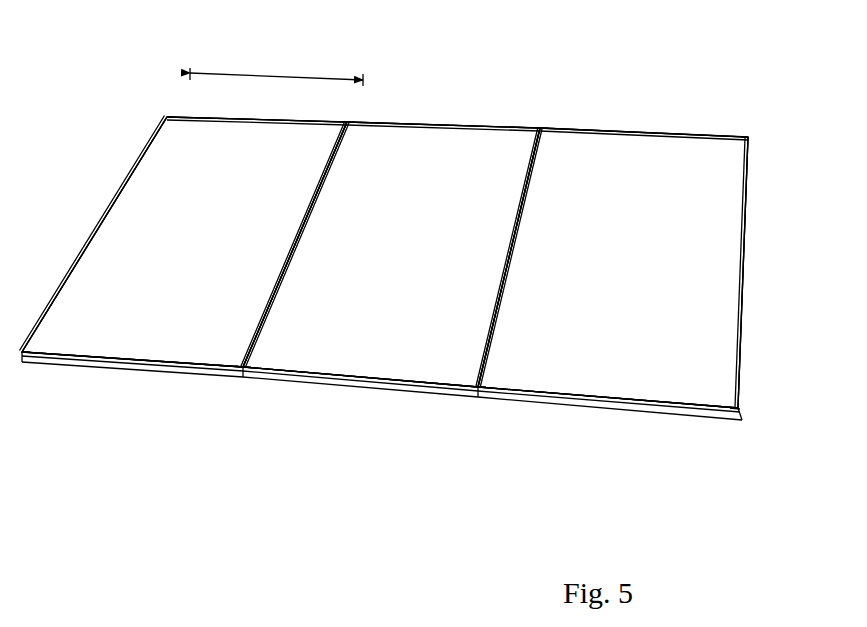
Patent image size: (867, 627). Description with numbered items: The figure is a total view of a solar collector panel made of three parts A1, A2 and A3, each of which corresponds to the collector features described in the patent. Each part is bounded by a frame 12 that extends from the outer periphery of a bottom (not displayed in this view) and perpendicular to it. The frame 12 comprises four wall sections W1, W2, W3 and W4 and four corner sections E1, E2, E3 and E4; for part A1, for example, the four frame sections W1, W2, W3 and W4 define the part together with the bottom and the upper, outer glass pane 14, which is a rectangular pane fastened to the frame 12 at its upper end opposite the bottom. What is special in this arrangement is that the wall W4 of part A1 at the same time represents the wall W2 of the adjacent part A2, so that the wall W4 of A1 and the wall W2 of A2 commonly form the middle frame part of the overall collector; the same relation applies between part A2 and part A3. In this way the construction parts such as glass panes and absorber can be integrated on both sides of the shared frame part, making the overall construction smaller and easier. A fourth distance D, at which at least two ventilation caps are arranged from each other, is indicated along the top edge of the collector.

The frame 12 is at (577, 404).
The outer glass pane 14 is at (192, 308).
The wall section W1 is at (185, 368).
The wall section W2 is at (100, 222).
The wall section W3 is at (253, 118).
The wall section W4 is at (312, 201).
The corner section E1 is at (42, 345).
The corner section E2 is at (167, 106).
The corner section E3 is at (340, 129).
The corner section E4 is at (231, 360).
The part of the solar panel A1 is at (176, 260).
The part of the solar panel A2 is at (378, 274).
The part of the solar panel A3 is at (608, 274).
The fourth distance D is at (276, 67).